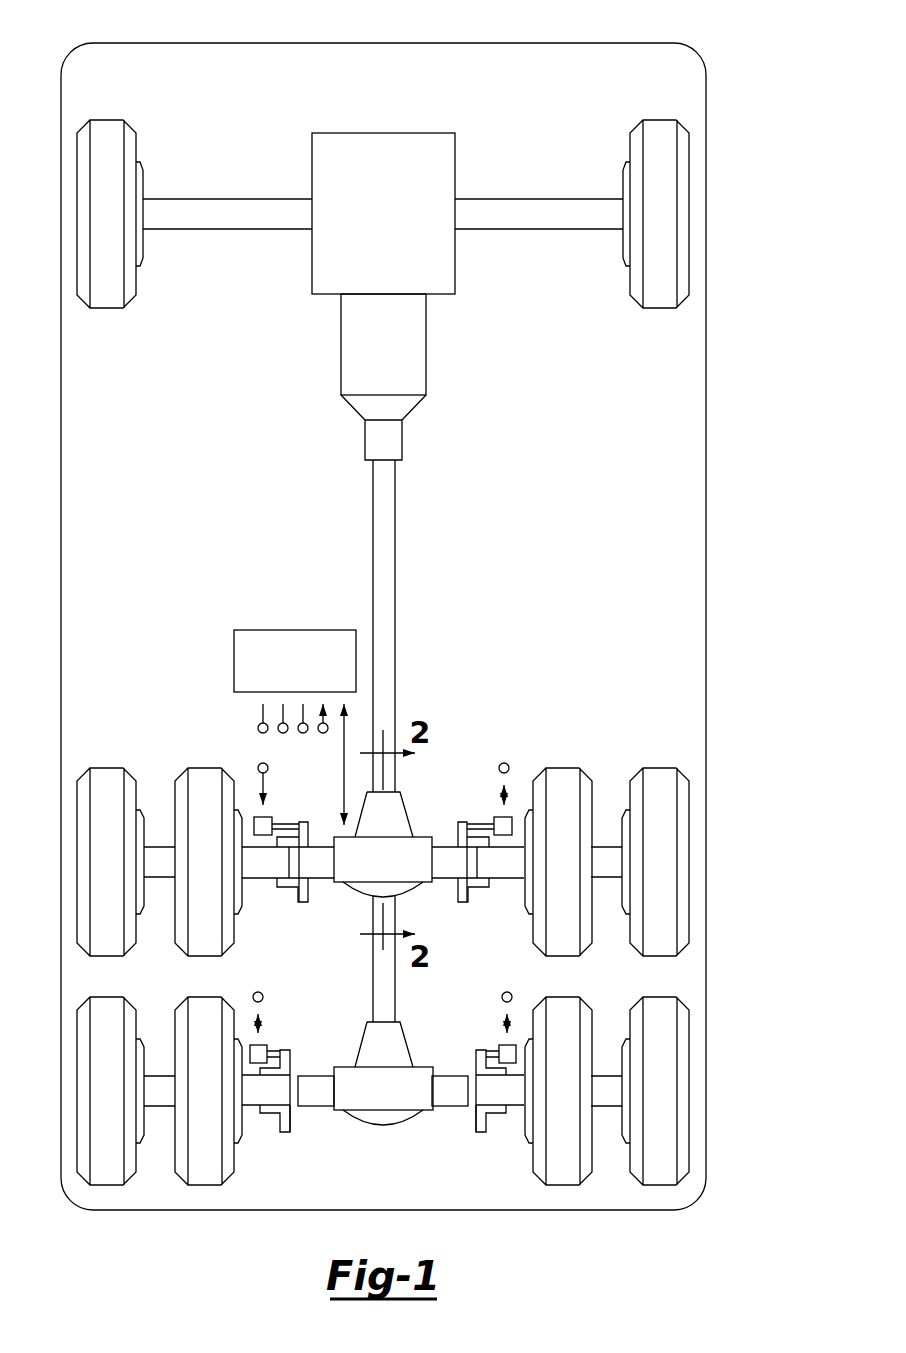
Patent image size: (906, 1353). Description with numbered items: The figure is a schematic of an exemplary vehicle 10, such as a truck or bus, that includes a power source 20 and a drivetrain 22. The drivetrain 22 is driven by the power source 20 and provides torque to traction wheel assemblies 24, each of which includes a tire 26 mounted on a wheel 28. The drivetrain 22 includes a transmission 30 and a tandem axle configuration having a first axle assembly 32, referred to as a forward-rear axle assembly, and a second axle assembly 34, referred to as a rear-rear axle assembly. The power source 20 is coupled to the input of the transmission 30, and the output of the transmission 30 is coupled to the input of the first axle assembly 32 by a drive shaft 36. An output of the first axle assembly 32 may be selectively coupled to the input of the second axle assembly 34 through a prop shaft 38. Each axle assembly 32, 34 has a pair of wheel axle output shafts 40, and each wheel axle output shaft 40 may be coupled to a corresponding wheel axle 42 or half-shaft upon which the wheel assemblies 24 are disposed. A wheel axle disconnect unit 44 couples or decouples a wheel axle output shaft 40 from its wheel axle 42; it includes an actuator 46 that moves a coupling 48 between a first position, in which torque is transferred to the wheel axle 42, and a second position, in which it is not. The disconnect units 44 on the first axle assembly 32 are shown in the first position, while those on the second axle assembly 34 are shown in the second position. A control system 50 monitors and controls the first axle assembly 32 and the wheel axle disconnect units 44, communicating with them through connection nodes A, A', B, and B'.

The vehicle 10 is at (703, 48).
The power source 20 is at (373, 228).
The drivetrain 22 is at (282, 392).
The transmission 30 is at (373, 359).
The drive shaft 36 is at (396, 534).
The first axle assembly 32 is at (414, 822).
The prop shaft 38 is at (396, 984).
The second axle assembly 34 is at (367, 1030).
The traction wheel assembly 24 is at (203, 962).
The tire 26 is at (97, 874).
The wheel 28 is at (145, 890).
The wheel axle output shaft 40 is at (322, 880).
The wheel axle 42 is at (160, 847).
The wheel axle disconnect unit 44 is at (311, 830).
The actuator 46 is at (254, 820).
The coupling 48 is at (302, 903).
The control system 50 is at (285, 676).